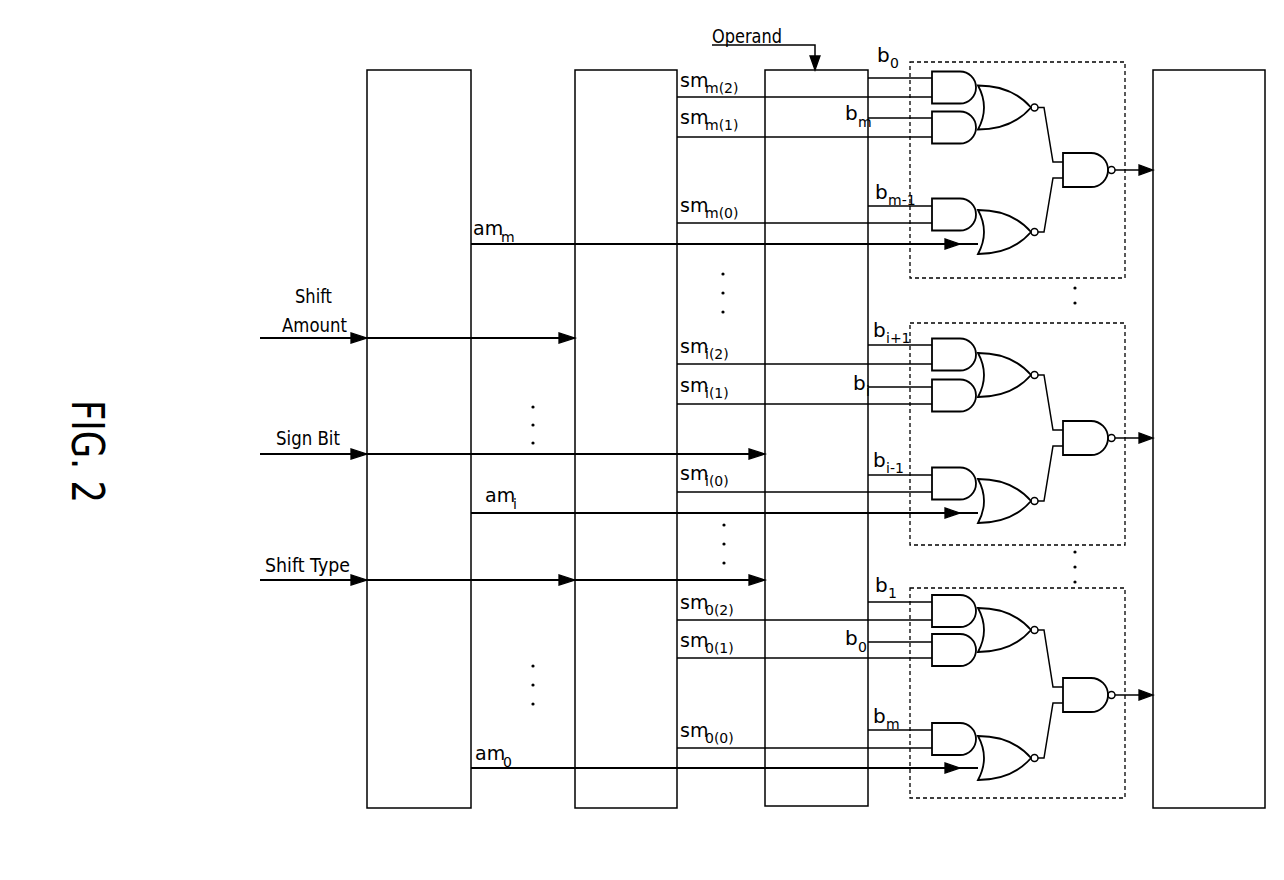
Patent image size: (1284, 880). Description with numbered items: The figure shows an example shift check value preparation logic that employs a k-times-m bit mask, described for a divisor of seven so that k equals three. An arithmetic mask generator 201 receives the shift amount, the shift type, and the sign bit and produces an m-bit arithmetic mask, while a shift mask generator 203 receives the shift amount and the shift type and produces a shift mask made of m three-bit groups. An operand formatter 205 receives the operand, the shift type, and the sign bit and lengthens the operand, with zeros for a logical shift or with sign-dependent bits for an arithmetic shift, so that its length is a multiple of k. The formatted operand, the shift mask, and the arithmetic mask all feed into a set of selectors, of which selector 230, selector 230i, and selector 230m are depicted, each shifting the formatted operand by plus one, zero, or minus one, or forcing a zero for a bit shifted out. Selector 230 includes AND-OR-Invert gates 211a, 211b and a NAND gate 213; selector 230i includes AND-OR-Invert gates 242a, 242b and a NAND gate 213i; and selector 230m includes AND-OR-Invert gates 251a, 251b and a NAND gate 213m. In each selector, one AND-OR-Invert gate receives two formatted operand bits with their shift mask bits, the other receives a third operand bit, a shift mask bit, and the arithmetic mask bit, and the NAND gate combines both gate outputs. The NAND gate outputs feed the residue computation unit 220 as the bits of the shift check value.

The arithmetic mask generator 201 is at (404, 178).
The shift mask generator 203 is at (611, 156).
The operand formatter 205 is at (802, 866).
The residue computation unit 220 is at (1193, 486).
The selector 230m is at (1118, 85).
The selector 230i is at (1118, 353).
The selector 230 is at (1117, 613).
The AND-OR-Invert gate 251b is at (1005, 121).
The AND-OR-Invert gate 251a is at (999, 243).
The NAND gate 213m is at (1091, 182).
The AND-OR-Invert gate 242b is at (1004, 389).
The AND-OR-Invert gate 242a is at (998, 511).
The NAND gate 213i is at (1089, 450).
The AND-OR-Invert gate 211b is at (1004, 645).
The AND-OR-Invert gate 211a is at (997, 768).
The NAND gate 213 is at (1089, 707).